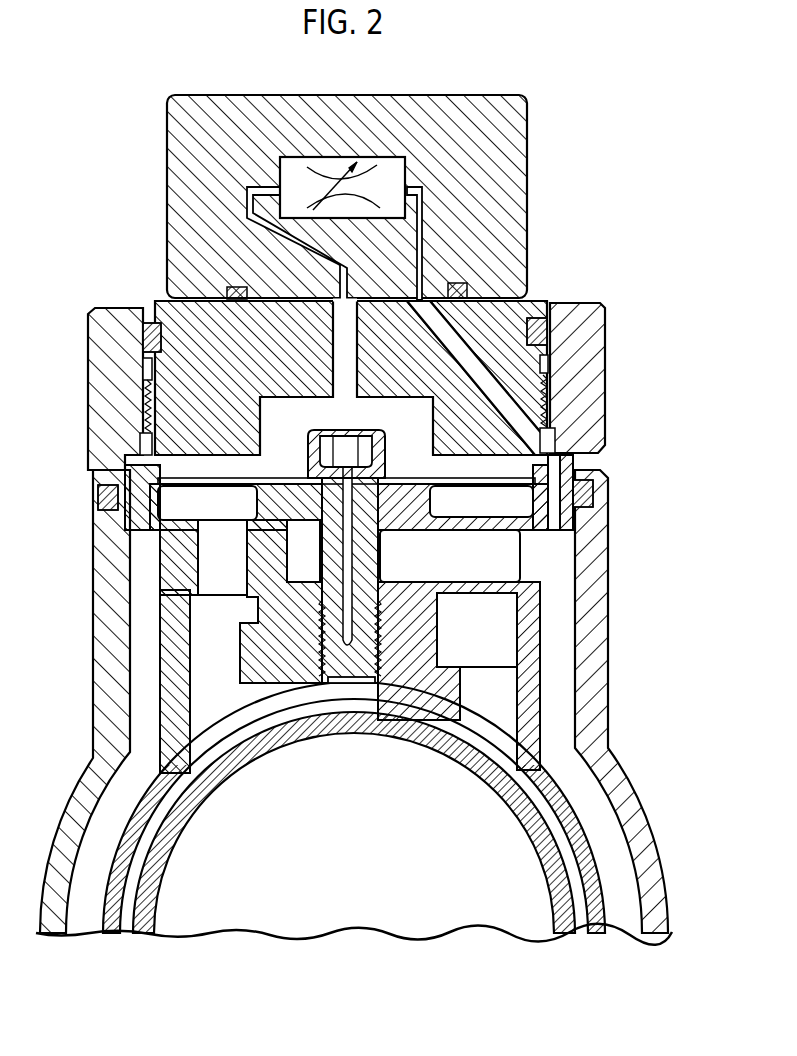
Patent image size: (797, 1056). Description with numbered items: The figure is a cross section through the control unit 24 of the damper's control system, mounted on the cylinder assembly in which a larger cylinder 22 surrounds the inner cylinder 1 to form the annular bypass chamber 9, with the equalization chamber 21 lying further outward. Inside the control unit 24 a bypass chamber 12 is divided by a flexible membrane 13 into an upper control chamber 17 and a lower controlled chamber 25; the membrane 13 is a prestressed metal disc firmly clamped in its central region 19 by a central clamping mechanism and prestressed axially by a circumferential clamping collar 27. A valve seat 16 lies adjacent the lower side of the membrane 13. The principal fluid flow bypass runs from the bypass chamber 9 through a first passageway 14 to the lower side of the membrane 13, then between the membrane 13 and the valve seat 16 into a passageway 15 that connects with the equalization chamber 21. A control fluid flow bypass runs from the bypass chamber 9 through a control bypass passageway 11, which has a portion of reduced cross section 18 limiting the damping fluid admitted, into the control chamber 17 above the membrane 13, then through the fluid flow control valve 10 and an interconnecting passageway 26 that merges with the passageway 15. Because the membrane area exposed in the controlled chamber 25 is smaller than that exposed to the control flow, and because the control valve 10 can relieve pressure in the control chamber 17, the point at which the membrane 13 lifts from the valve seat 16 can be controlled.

The cylinder 1 is at (562, 903).
The bypass chamber 9 is at (578, 903).
The fluid flow control valve 10 is at (395, 179).
The control bypass passageway 11 is at (350, 600).
The bypass chamber 12 is at (165, 462).
The flexible membrane 13 is at (120, 496).
The first passageway 14 is at (200, 575).
The passageway 15 is at (255, 527).
The valve seat 16 is at (262, 497).
The control chamber 17 is at (505, 472).
The portion of reduced cross section 18 is at (350, 653).
The central region 19 is at (385, 465).
The equalization chamber 21 is at (625, 900).
The cylinder 22 is at (605, 905).
The control unit 24 is at (607, 600).
The controlled chamber 25 is at (170, 518).
The interconnecting passageway 26 is at (500, 378).
The circumferential clamping collar 27 is at (505, 467).